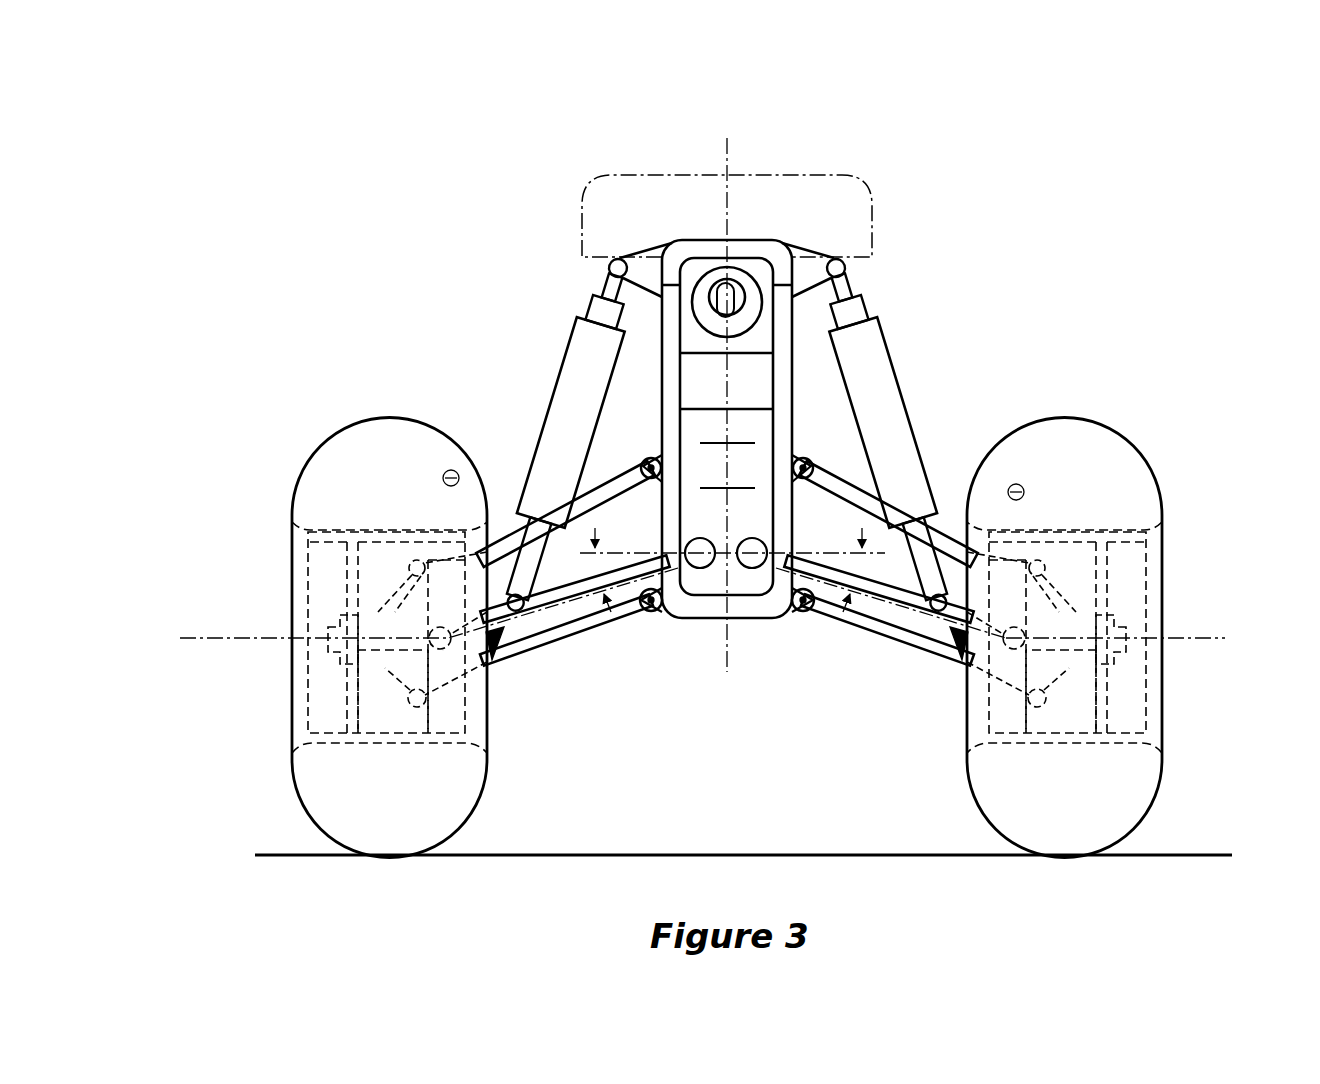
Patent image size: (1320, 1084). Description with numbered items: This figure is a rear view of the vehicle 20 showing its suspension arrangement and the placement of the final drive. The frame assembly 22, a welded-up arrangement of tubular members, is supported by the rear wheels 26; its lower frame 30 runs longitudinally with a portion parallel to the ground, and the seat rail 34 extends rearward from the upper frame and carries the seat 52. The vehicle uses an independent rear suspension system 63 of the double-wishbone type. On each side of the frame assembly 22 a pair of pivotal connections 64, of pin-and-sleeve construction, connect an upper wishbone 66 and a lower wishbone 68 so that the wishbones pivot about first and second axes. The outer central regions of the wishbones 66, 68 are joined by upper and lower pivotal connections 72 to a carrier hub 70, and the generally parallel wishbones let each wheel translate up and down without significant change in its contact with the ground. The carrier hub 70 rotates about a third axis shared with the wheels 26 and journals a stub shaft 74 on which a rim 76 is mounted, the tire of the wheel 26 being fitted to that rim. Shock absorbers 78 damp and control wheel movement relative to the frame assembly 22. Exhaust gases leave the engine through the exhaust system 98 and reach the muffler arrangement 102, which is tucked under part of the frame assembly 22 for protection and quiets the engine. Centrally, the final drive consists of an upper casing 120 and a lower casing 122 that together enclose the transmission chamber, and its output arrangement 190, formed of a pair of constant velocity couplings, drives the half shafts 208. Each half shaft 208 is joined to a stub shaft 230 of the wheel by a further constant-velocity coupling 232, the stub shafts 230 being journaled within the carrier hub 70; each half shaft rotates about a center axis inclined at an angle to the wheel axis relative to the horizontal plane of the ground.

The vehicle 20 is at (1212, 259).
The frame assembly 22 is at (766, 238).
The rear wheels 26 is at (322, 472).
The lower frame 30 is at (783, 370).
The seat rail 34 is at (792, 243).
The seat 52 is at (582, 238).
The independent rear suspension system 63 is at (611, 474).
The pivotal connections 64 is at (650, 456).
The upper wishbone 66 is at (553, 490).
The lower wishbone 68 is at (504, 675).
The carrier hub 70 is at (395, 582).
The upper and lower pivotal connections 72 is at (414, 560).
The stub shaft 74 is at (378, 668).
The rim 76 is at (333, 745).
The shock absorbers 78 is at (578, 357).
The exhaust system 98 is at (706, 265).
The muffler arrangement 102 is at (703, 362).
The upper casing 120 is at (606, 300).
The lower casing 122 is at (727, 618).
The output arrangement 190 is at (705, 534).
The half shafts 208 is at (592, 656).
The stub shafts 230 is at (355, 613).
The constant-velocity couplings 232 is at (443, 660).